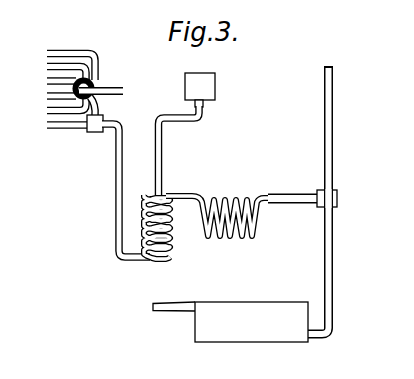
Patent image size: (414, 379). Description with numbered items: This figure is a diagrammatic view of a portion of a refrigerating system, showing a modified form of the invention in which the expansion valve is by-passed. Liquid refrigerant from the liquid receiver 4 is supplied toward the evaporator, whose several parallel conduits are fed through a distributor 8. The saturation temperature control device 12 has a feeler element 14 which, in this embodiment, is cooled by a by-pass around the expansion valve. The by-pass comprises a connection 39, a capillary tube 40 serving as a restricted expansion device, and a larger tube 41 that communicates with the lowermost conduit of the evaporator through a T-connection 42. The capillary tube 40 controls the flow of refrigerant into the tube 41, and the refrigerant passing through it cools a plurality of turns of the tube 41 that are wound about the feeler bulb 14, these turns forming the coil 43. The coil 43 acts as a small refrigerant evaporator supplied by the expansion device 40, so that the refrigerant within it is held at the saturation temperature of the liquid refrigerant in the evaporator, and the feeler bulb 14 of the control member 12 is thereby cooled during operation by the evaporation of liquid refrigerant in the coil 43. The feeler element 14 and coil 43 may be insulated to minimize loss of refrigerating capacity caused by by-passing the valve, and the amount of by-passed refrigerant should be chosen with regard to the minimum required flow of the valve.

The liquid receiver 4 is at (245, 310).
The distributor 8 is at (92, 84).
The saturation temperature control device 12 is at (215, 82).
The feeler element 14 is at (162, 262).
The connection 39 is at (296, 193).
The capillary tube 40 is at (238, 197).
The larger tube 41 is at (135, 261).
The T-connection 42 is at (95, 133).
The coil 43 is at (170, 236).